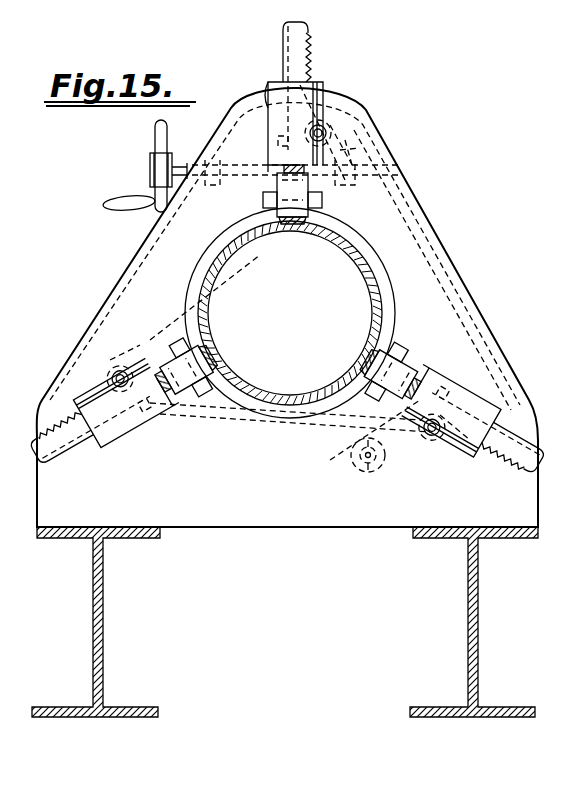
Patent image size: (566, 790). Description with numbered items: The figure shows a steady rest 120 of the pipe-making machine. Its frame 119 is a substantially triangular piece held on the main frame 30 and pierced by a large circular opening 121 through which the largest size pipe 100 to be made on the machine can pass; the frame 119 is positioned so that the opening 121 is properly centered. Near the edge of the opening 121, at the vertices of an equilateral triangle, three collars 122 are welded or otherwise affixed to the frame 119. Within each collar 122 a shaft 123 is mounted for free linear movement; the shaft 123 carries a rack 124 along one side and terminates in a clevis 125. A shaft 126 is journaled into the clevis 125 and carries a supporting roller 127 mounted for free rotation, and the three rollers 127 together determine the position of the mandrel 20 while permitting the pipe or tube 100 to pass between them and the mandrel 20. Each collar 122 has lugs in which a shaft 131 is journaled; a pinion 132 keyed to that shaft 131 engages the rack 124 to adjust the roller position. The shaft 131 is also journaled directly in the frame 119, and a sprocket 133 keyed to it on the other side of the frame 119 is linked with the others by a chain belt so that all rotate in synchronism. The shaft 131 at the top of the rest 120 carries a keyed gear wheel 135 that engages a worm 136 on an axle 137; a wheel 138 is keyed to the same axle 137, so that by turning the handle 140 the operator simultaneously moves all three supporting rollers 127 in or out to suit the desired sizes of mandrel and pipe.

The mandrel 20 is at (247, 238).
The main frame 30 is at (105, 645).
The pipe 100 is at (292, 415).
The frame 119 is at (345, 527).
The rest 120 is at (467, 285).
The circular opening 121 is at (392, 250).
The collar 122 is at (268, 112).
The shaft 123 is at (283, 52).
The rack 124 is at (309, 52).
The clevis 125 is at (281, 188).
The shaft 126 is at (323, 200).
The supporting roller 127 is at (300, 226).
The shaft 131 is at (326, 133).
The pinion 132 is at (275, 141).
The sprocket 133 is at (348, 108).
The gear wheel 135 is at (270, 84).
The worm 136 is at (352, 152).
The axle 137 is at (182, 165).
The wheel 138 is at (153, 132).
The handle 140 is at (118, 205).